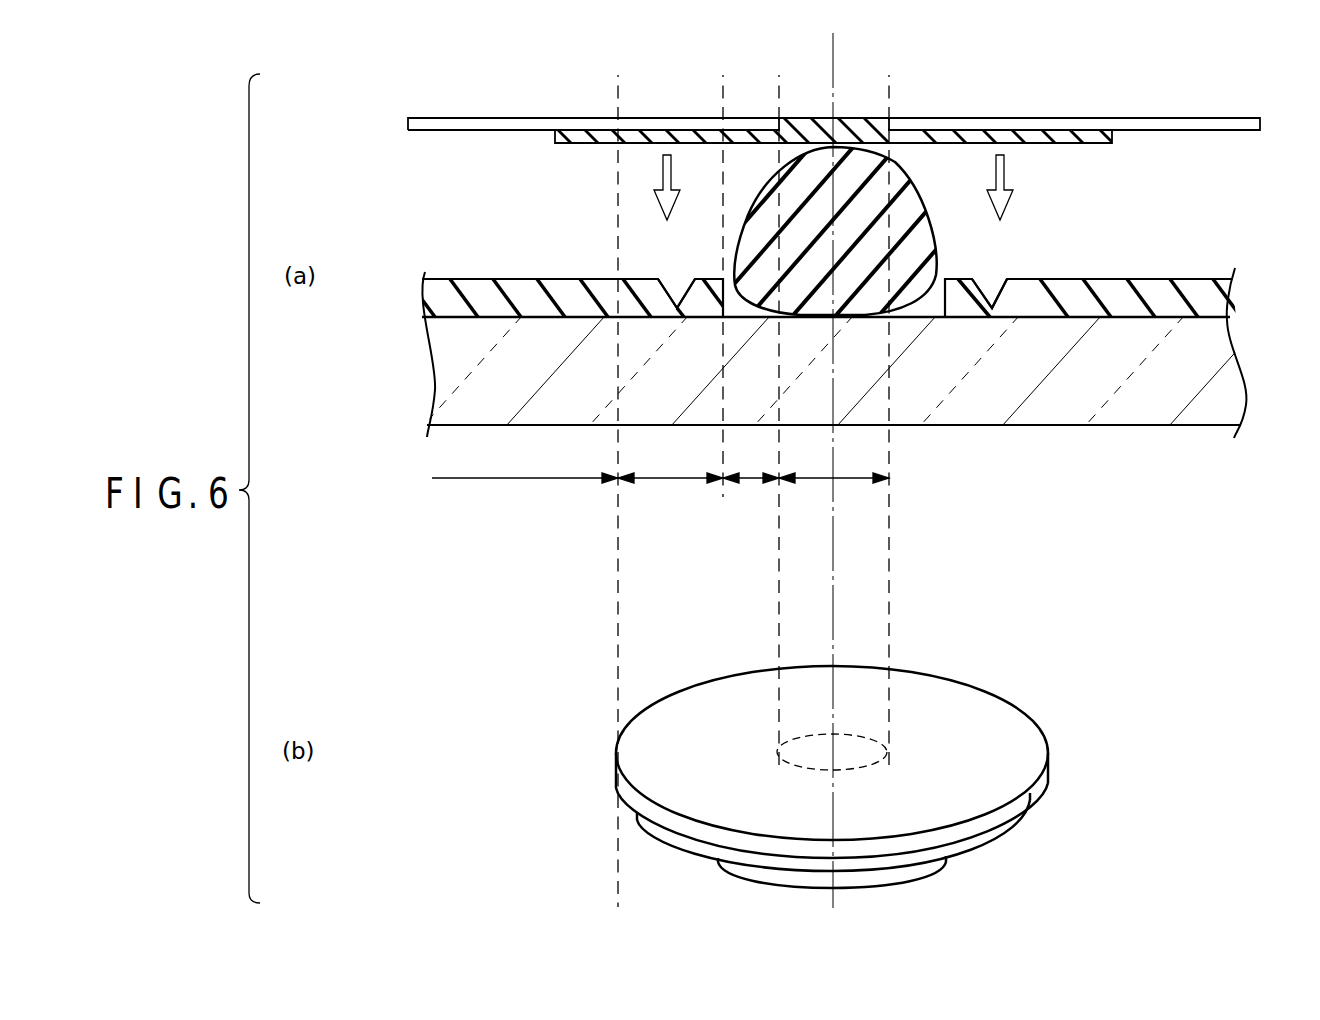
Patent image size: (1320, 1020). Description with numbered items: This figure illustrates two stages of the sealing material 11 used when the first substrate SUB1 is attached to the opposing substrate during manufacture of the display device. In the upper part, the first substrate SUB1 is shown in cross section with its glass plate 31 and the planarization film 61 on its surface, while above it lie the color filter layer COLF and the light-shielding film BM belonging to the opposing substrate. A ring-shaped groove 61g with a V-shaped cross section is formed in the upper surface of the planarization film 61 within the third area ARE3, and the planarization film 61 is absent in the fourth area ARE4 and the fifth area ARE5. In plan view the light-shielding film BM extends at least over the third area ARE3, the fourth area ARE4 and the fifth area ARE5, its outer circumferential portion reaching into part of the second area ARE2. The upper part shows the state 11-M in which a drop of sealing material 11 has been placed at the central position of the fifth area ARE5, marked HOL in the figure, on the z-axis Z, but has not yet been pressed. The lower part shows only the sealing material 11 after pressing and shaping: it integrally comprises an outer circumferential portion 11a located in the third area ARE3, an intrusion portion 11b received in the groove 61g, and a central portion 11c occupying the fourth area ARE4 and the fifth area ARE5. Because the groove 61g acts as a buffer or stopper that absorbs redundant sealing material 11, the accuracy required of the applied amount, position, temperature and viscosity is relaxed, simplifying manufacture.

The color filter layer COLF is at (1157, 127).
The light-shielding film BM is at (1088, 145).
The planarization film 61 is at (1196, 292).
The ring-shaped groove 61g is at (673, 283).
The drop state of sealing material 11-M is at (910, 305).
The first substrate SUB1 is at (802, 377).
The glass plate 31 is at (1133, 412).
The sealing material 11 is at (865, 733).
The outer circumferential portion 11a is at (1040, 792).
The intrusion portion 11b is at (1006, 834).
The central portion 11c is at (921, 877).
The hole HOL is at (873, 657).
The z-axis Z is at (835, 458).
The second area ARE2 is at (525, 493).
The third area ARE3 is at (670, 493).
The fourth area ARE4 is at (750, 483).
The fifth area ARE5 is at (864, 490).